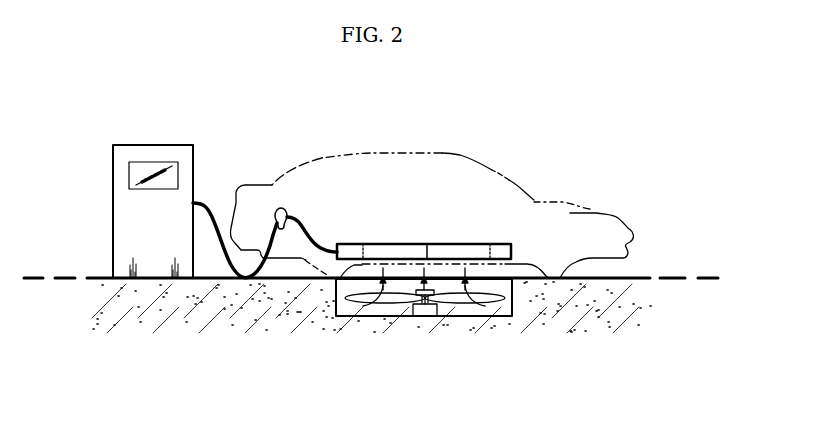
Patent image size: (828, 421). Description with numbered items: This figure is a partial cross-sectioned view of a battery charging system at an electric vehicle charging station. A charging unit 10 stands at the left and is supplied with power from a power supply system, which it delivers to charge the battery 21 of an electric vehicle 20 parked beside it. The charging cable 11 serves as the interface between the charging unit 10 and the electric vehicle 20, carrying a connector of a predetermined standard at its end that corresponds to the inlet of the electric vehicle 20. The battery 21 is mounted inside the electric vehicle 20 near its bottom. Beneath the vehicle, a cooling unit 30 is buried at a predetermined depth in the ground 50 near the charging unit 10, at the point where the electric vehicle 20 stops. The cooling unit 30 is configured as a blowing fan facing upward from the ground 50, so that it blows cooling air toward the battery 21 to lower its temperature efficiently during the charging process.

The charging unit 10 is at (165, 145).
The charging cable 11 is at (212, 205).
The electric vehicle 20 is at (389, 152).
The battery 21 is at (475, 244).
The cooling unit 30 is at (414, 330).
The ground 50 is at (640, 278).